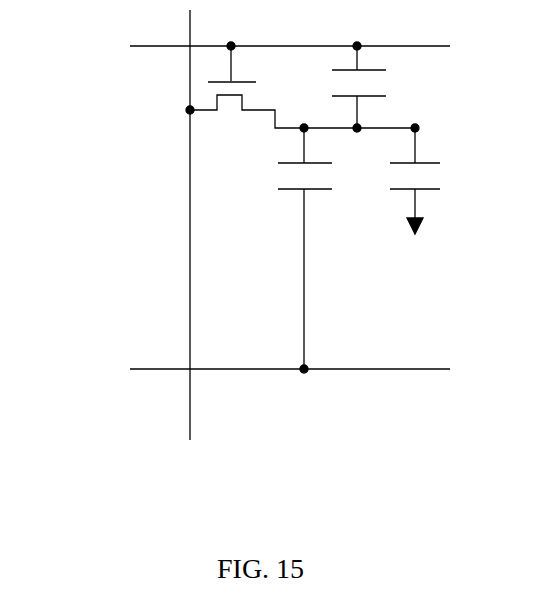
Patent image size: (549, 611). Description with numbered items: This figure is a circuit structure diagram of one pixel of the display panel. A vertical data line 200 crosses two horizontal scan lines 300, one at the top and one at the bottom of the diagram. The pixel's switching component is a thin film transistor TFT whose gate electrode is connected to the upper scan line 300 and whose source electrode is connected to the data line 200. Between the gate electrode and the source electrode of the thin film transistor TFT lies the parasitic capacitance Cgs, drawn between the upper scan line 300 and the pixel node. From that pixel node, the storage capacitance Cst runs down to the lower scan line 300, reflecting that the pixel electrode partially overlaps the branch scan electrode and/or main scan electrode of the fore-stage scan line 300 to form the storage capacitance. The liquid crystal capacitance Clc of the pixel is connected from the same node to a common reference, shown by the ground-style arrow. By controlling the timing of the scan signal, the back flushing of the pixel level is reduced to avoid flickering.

The scan line 300 is at (166, 46).
The data line 200 is at (190, 414).
The thin film transistor TFT is at (302, 87).
The parasitic capacitance Cgs is at (380, 87).
The storage capacitance Cst is at (283, 248).
The liquid crystal capacitance Clc is at (435, 181).